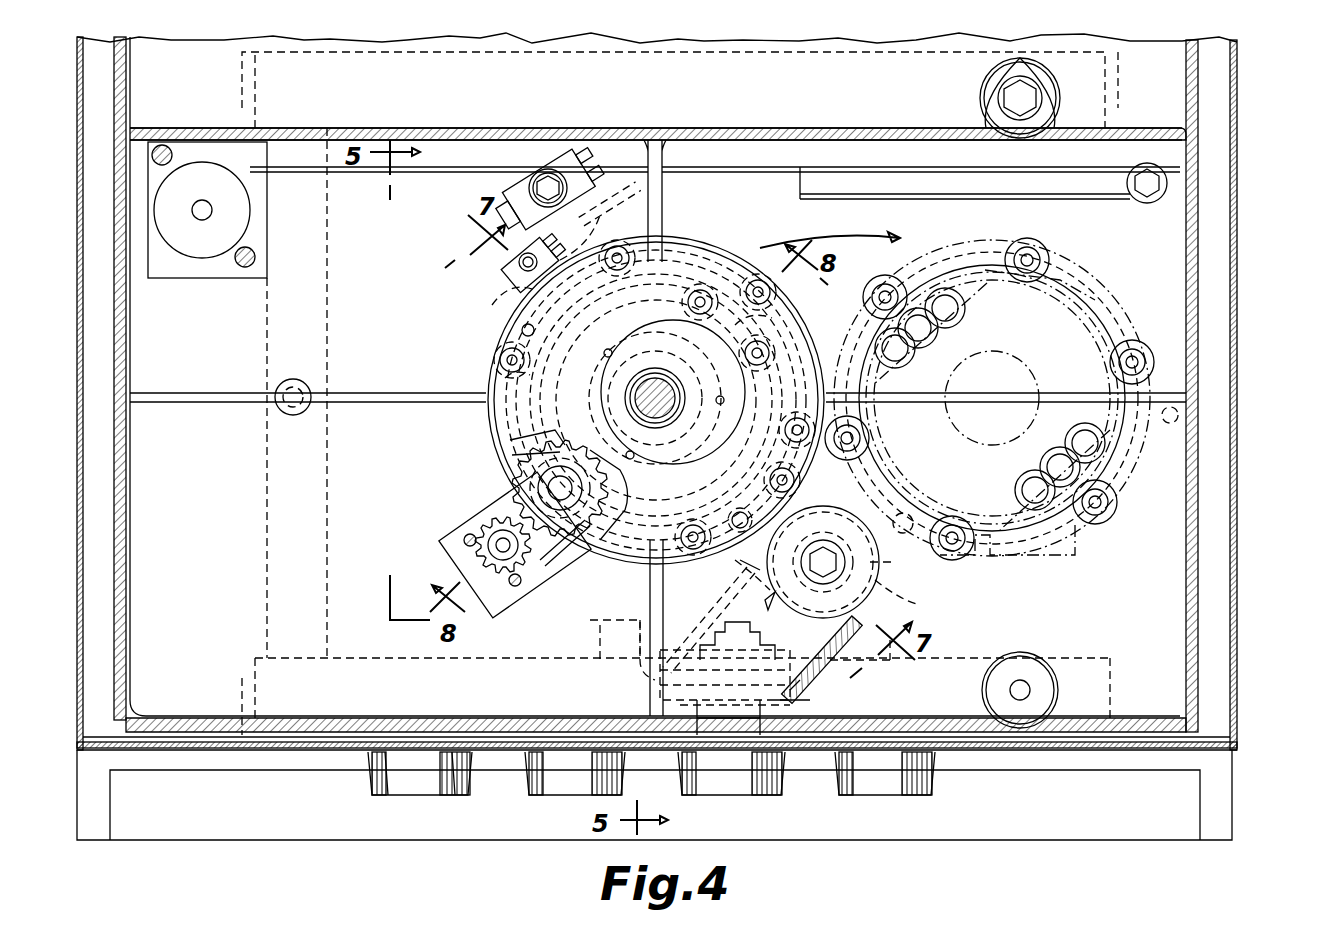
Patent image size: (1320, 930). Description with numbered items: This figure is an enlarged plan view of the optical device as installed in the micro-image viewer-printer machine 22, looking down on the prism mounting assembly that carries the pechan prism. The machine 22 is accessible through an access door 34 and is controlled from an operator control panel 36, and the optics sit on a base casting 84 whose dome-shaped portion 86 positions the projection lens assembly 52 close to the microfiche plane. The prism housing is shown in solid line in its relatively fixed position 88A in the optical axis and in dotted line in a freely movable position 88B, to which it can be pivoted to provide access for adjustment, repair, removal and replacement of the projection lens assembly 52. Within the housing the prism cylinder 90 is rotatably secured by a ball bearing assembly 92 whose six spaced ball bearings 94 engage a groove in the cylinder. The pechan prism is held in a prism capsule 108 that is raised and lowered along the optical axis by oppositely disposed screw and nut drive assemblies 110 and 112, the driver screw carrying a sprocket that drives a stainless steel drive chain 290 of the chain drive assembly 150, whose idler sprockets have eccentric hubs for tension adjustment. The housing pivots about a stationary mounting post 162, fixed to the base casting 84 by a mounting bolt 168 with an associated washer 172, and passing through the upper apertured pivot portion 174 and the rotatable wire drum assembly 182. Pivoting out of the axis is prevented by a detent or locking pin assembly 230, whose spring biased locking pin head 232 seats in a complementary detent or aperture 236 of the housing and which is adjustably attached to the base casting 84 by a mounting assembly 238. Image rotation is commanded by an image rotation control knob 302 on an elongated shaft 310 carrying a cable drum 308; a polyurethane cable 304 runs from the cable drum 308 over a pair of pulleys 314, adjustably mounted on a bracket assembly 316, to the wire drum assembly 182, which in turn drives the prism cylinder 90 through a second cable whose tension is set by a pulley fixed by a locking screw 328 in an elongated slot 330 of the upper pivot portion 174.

The micro-image viewer-printer machine 22 is at (1300, 102).
The access door 34 is at (77, 424).
The operator control panel 36 is at (330, 830).
The projection lens assembly 52 is at (655, 395).
The base casting 84 is at (120, 585).
The dome-shaped portion 86 is at (684, 265).
The fixed position of prism housing 88A is at (712, 262).
The freely movable position of prism housing 88B is at (1070, 272).
The prism cylinder 90 is at (735, 275).
The ball bearing assembly 92 is at (495, 345).
The ball bearings 94 is at (620, 245).
The prism capsule 108 is at (510, 438).
The screw and nut drive assembly 110 is at (535, 478).
The screw and nut drive assembly 112 is at (770, 312).
The chain drive assembly 150 is at (590, 560).
The stationary mounting post 162 is at (850, 570).
The mounting bolt 168 is at (835, 565).
The washer 172 is at (840, 538).
The upper apertured pivot portion 174 is at (905, 605).
The rotatable wire drum assembly 182 is at (762, 632).
The detent or locking pin assembly 230 is at (478, 266).
The detent or locking pin head 232 is at (556, 258).
The detent or aperture 236 is at (510, 305).
The mounting assembly 238 is at (548, 168).
The drive chain 290 is at (500, 372).
The image rotation control knob 302 is at (752, 790).
The polyurethane cable 304 is at (838, 652).
The cable drum 308 is at (800, 700).
The elongated shaft 310 is at (660, 702).
The pulleys 314 is at (645, 640).
The bracket assembly 316 is at (645, 680).
The locking screw 328 is at (735, 562).
The elongated slot 330 is at (752, 590).